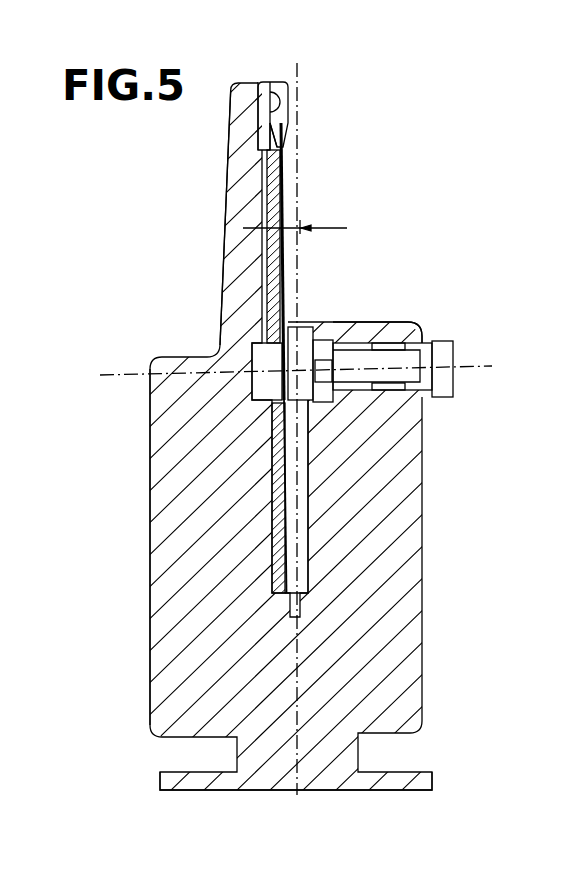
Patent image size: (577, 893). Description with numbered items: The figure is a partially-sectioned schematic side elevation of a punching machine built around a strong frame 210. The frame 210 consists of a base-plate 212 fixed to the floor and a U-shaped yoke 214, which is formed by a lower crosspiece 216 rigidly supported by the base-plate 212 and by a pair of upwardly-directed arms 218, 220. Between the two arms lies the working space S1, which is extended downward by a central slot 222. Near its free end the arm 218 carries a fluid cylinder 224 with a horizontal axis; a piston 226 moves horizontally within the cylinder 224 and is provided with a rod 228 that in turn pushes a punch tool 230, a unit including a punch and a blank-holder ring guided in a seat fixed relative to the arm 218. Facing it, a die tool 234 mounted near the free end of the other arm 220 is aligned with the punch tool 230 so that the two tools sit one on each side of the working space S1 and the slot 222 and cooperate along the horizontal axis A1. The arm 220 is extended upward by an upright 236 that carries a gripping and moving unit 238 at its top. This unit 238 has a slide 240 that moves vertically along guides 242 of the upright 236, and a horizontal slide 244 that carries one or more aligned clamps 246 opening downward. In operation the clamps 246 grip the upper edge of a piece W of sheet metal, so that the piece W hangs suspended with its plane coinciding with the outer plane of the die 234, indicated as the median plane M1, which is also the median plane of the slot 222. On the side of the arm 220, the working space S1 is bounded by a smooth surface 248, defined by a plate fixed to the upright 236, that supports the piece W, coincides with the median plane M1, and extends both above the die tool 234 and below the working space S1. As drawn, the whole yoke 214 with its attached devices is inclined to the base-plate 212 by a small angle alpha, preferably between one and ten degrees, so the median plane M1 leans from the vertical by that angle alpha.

The frame 210 is at (457, 441).
The base-plate 212 is at (423, 781).
The U-shaped yoke 214 is at (457, 571).
The lower crosspiece 216 is at (307, 680).
The arm 218 is at (415, 527).
The arm 220 is at (160, 537).
The central slot 222 is at (303, 558).
The fluid cylinder 224 is at (437, 340).
The piston 226 is at (398, 325).
The rod 228 is at (345, 338).
The punch tool 230 is at (311, 334).
The die tool 234 is at (257, 350).
The upright 236 is at (227, 208).
The gripping and moving unit 238 is at (323, 112).
The slide 240 is at (262, 83).
The guides 242 is at (262, 166).
The horizontal slide 244 is at (287, 93).
The clamps 246 is at (280, 125).
The smooth surface 248 is at (277, 487).
The piece of sheet metal W is at (282, 180).
The angle alpha is at (295, 214).
The horizontal axis A1 is at (295, 355).
The working space S1 is at (290, 316).
The median plane M1 is at (284, 455).